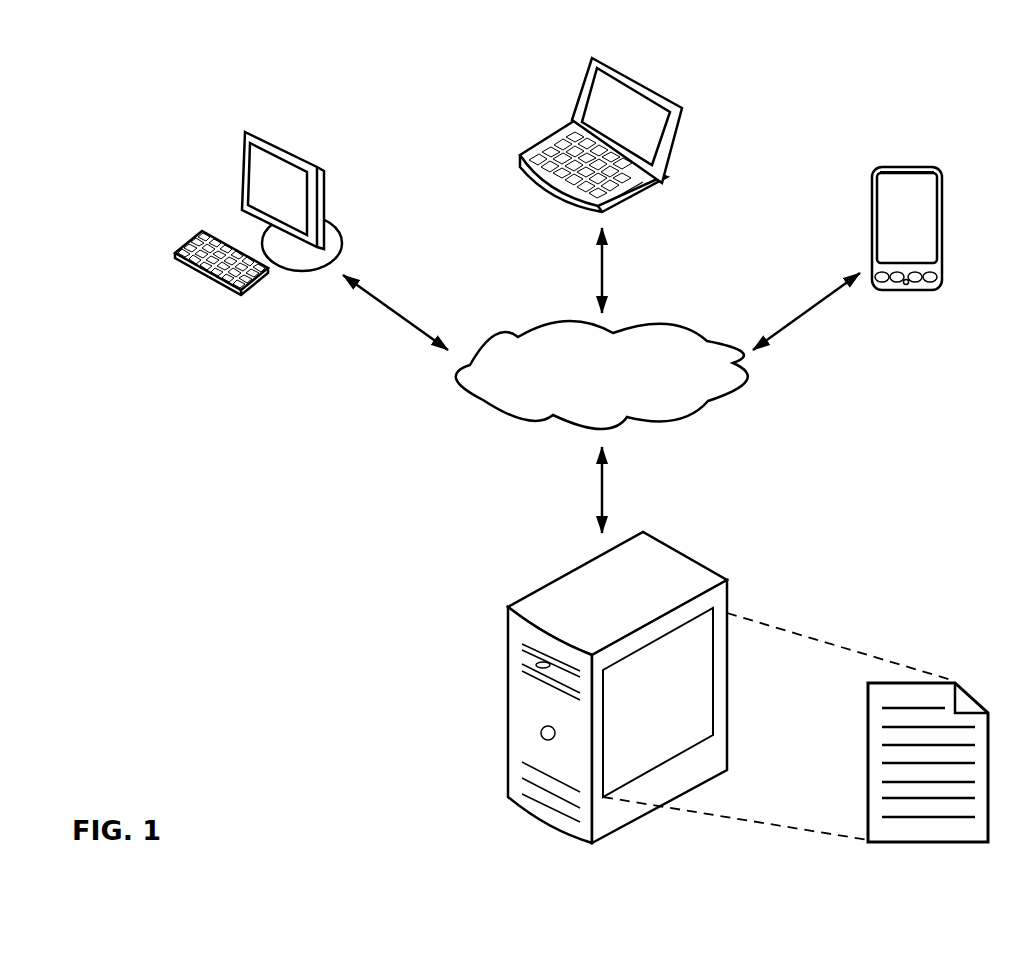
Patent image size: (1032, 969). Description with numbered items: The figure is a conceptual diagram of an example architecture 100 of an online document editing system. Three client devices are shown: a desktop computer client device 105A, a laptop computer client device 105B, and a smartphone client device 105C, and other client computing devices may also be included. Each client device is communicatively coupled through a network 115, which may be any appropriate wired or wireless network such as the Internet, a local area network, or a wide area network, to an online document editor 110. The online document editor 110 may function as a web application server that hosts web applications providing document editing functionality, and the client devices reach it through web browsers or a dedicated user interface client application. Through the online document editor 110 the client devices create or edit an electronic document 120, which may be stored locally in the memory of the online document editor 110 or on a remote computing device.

The example architecture 100 is at (866, 88).
The desktop computer client device 105A is at (245, 132).
The laptop computer client device 105B is at (592, 62).
The smartphone client device 105C is at (872, 178).
The network 115 is at (589, 412).
The online document editor 110 is at (644, 736).
The electronic document 120 is at (976, 700).